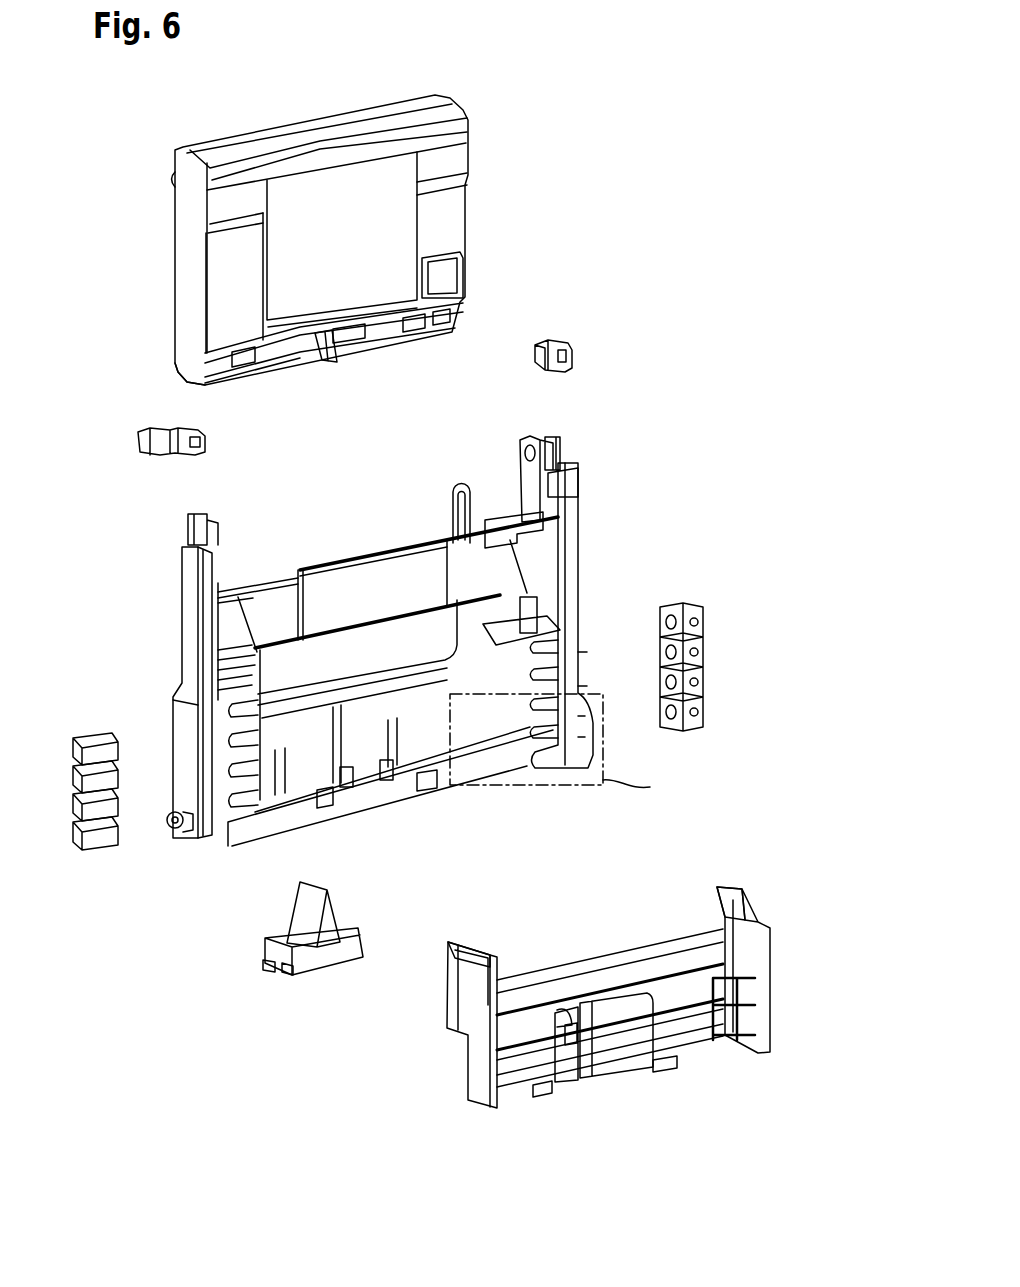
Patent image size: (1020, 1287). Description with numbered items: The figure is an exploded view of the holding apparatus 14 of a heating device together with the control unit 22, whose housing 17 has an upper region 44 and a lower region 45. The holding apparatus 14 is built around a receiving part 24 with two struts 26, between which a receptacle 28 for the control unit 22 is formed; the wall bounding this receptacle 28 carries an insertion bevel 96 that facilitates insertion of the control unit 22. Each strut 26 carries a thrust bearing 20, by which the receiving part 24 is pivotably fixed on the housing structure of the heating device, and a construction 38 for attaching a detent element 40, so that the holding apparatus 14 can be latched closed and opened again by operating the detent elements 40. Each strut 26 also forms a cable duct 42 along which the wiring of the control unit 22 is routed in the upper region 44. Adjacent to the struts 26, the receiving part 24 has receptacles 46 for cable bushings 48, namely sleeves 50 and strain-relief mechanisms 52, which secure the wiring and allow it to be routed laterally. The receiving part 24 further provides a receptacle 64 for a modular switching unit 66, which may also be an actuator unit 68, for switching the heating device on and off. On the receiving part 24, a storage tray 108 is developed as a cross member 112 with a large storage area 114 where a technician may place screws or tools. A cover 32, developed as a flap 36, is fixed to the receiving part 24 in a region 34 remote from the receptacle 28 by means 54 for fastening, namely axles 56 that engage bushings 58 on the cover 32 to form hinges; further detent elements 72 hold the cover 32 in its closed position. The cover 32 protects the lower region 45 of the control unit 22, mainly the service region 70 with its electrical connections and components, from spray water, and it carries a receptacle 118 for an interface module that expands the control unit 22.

The holding apparatus 14 is at (668, 399).
The housing 17 is at (314, 253).
The control unit 22 is at (314, 253).
The upper region 44 is at (147, 178).
The lower region 45 is at (157, 354).
The service region 70 is at (376, 354).
The detent element 40 is at (570, 347).
The construction 38 is at (572, 448).
The receptacle 28 is at (262, 543).
The strut 26 is at (580, 525).
The insertion bevel 96 is at (306, 698).
The storage area 114 is at (345, 590).
The storage tray 108 is at (373, 517).
The cross member 112 is at (391, 585).
The receptacle 64 is at (367, 762).
The receiving part 24 is at (500, 593).
The cable duct 42 is at (573, 594).
The receptacle 46 is at (567, 667).
The cable bushing 48 is at (101, 830).
The sleeve 50 is at (100, 837).
The strain-relief mechanism 52 is at (705, 612).
The thrust bearing 20 is at (172, 835).
The means for fastening 54 is at (380, 785).
The axle 56 is at (323, 808).
The region 34 is at (389, 810).
The switching unit 66 is at (313, 956).
The actuator unit 68 is at (322, 955).
The cover 32 is at (586, 1002).
The flap 36 is at (586, 1002).
The further detent element 72 is at (756, 893).
The bushing 58 is at (547, 1090).
The receptacle 118 is at (628, 1093).